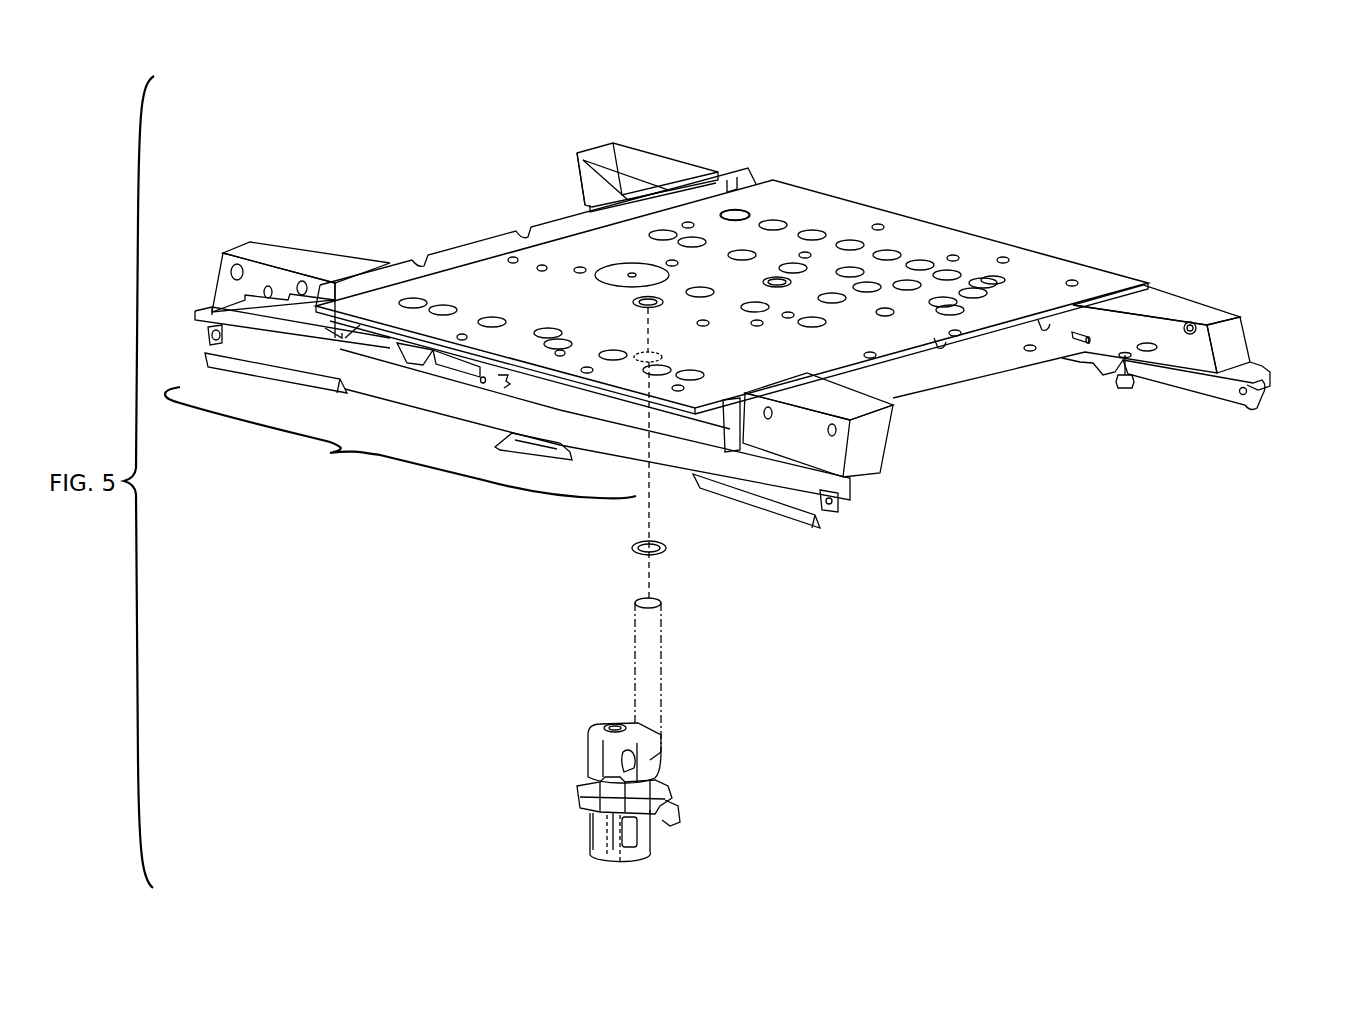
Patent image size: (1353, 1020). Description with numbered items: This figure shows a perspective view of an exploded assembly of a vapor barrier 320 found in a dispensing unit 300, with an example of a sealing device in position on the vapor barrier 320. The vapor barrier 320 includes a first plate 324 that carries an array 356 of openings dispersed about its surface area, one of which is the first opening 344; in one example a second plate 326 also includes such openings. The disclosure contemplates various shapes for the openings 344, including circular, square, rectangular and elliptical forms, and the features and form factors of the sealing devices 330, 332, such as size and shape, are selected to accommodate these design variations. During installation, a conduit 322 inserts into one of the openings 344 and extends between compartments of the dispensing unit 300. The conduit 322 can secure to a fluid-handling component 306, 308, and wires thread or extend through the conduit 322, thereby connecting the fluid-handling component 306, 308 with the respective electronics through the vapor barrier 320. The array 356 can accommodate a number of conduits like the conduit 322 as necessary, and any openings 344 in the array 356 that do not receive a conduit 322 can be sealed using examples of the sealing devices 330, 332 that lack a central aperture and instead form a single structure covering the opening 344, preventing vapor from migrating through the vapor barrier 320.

The dispensing unit 300 is at (328, 148).
The fluid-handling component 306 is at (572, 868).
The fluid-handling component 308 is at (628, 792).
The vapor barrier 320 is at (1290, 290).
The conduit 322 is at (665, 634).
The first plate 324 is at (1080, 262).
The second plate 326 is at (1032, 378).
The sealing device 330 is at (645, 298).
The sealing device 332 is at (668, 550).
The first opening 344 is at (738, 215).
The array of openings 356 is at (400, 442).